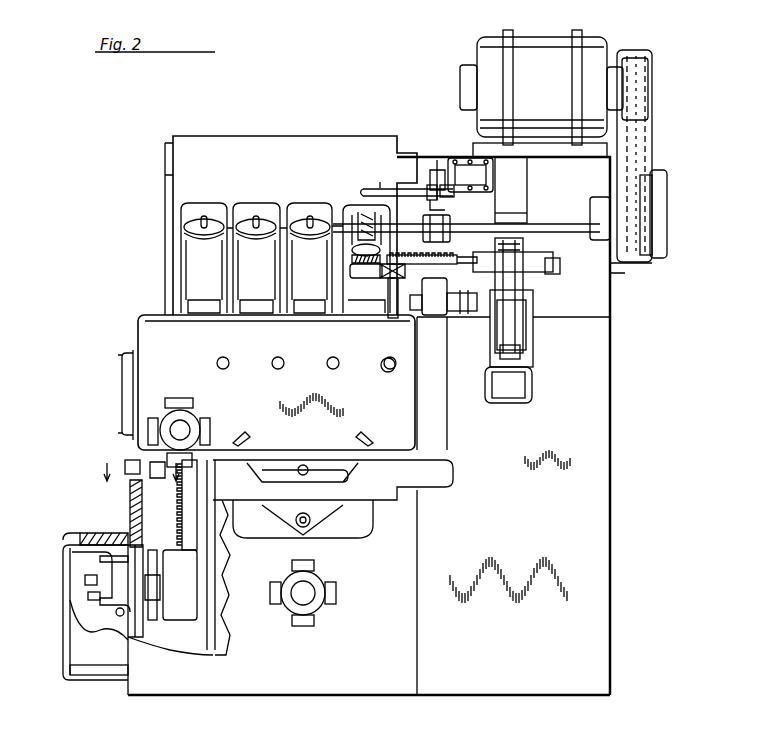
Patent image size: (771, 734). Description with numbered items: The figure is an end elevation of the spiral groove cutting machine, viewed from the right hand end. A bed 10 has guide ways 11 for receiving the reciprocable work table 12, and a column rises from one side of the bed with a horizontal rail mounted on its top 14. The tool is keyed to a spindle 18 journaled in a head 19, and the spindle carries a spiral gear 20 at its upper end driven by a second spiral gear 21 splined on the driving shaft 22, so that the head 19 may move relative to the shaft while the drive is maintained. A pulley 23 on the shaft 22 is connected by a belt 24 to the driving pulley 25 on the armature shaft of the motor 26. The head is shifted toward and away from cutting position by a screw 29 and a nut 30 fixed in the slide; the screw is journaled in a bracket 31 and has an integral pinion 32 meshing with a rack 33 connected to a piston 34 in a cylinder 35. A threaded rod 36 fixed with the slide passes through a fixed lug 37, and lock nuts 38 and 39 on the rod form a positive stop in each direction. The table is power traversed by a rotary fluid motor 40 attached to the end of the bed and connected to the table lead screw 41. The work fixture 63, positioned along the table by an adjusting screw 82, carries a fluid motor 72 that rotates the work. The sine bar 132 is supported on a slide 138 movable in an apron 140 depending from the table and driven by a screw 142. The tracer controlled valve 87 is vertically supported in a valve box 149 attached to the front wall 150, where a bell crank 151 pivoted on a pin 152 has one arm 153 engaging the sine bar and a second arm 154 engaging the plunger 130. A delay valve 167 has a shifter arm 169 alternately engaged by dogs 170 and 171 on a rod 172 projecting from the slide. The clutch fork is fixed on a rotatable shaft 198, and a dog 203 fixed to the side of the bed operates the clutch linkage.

The bed 10 is at (233, 696).
The guide ways 11 is at (378, 541).
The work table 12 is at (400, 486).
The column top 14 is at (610, 400).
The spindle 18 is at (350, 272).
The head 19 is at (254, 128).
The spiral gear 20 is at (350, 258).
The second spiral gear 21 is at (358, 212).
The driving shaft 22 is at (573, 234).
The pulley 23 is at (660, 222).
The belt 24 is at (648, 142).
The driving pulley 25 is at (648, 98).
The motor 26 is at (598, 52).
The screw 29 is at (452, 258).
The nut 30 is at (405, 275).
The bracket 31 is at (553, 268).
The pinion 32 is at (528, 258).
The rack 33 is at (525, 305).
The piston 34 is at (520, 355).
The cylinder 35 is at (530, 380).
The threaded rod 36 is at (392, 320).
The fixed lug 37 is at (432, 318).
The lock nut 38 is at (395, 322).
The lock nut 39 is at (470, 290).
The rotary fluid operable motor 40 is at (322, 606).
The table lead screw 41 is at (309, 527).
The fixture 63 is at (140, 322).
The fluid operable motor 72 is at (170, 430).
The adjusting screw 82 is at (308, 468).
The tracer controlled valve 87 is at (90, 615).
The plunger 130 is at (88, 597).
The sine bar 132 is at (153, 622).
The slide 138 is at (180, 621).
The apron 140 is at (208, 563).
The screw 142 is at (183, 530).
The valve box 149 is at (65, 662).
The front wall 150 is at (126, 668).
The bell crank 151 is at (115, 570).
The pin 152 is at (120, 616).
The arm 153 is at (124, 534).
The second arm 154 is at (85, 578).
The delay valve 167 is at (490, 176).
The shifter arm 169 is at (439, 162).
The dog 170 is at (430, 205).
The dog 171 is at (448, 197).
The rod 172 is at (380, 185).
The rotatable shaft 198 is at (152, 480).
The dog 203 is at (130, 462).